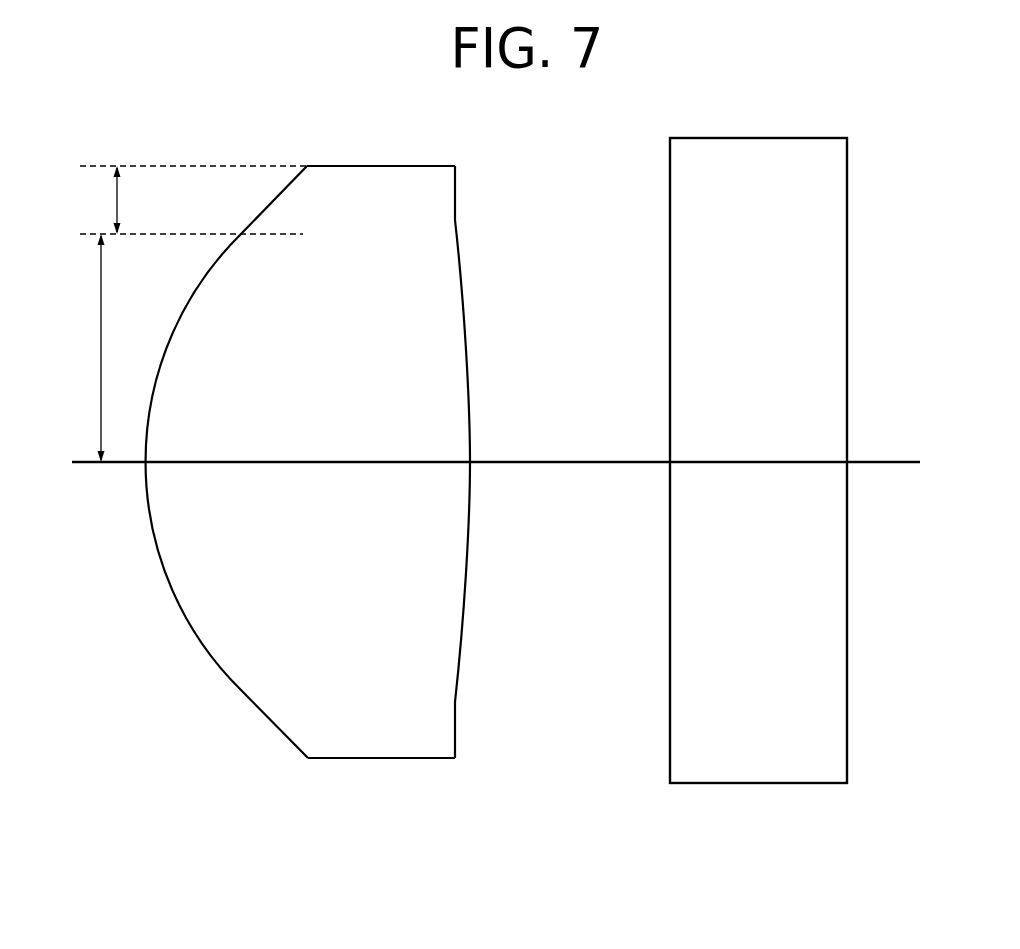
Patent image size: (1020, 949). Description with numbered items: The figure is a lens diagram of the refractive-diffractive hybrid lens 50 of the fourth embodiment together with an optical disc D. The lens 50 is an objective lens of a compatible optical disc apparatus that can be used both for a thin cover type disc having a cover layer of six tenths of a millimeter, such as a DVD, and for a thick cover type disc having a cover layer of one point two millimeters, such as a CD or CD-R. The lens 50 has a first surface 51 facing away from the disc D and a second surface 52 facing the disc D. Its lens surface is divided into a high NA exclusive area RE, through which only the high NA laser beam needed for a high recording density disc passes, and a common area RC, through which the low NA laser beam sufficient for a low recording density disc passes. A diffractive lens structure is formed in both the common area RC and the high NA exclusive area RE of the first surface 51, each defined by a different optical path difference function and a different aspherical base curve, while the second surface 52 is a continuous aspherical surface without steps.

The refractive-diffractive hybrid lens 50 is at (339, 515).
The first surface 51 is at (220, 673).
The second surface 52 is at (460, 672).
The optical disc D is at (754, 770).
The high NA exclusive area RE is at (190, 200).
The common area RC is at (83, 348).